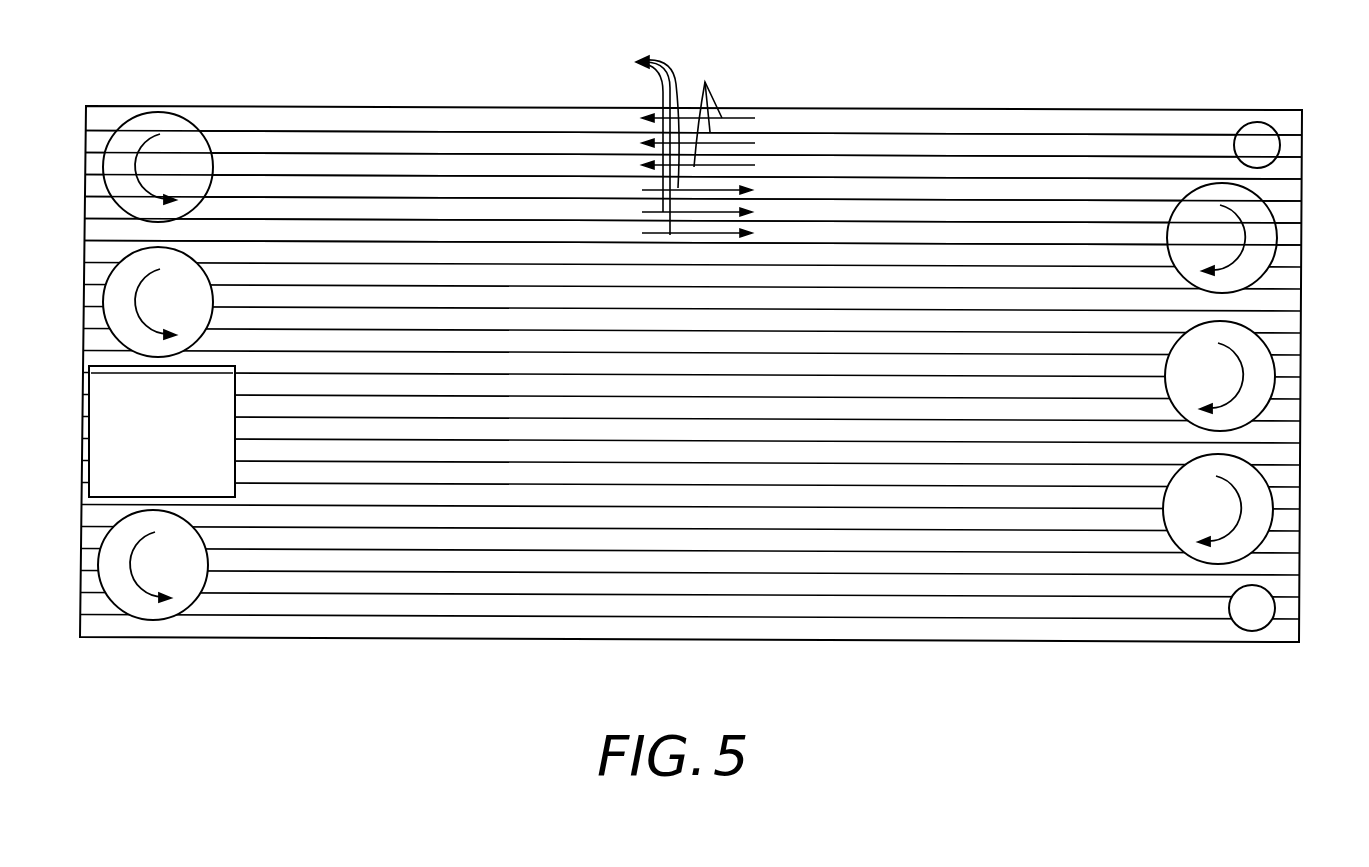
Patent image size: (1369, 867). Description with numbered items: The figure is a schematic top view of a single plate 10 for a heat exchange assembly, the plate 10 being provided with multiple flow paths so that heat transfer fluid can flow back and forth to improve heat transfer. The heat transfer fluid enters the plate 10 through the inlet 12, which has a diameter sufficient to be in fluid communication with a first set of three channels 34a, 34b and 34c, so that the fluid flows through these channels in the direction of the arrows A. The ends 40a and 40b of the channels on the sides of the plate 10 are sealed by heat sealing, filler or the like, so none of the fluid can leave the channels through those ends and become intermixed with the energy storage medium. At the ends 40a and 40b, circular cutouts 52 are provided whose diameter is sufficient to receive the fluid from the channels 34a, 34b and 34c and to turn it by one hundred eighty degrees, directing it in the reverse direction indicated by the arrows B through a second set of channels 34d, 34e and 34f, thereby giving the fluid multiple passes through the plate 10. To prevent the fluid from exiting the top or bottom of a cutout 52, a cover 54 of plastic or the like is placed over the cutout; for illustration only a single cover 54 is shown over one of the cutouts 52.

The plate 10 is at (946, 650).
The inlet 12 is at (1258, 148).
The channel 34a is at (1037, 125).
The channel 34b is at (980, 148).
The channel 34c is at (942, 167).
The channel 34d is at (905, 187).
The channel 34e is at (855, 213).
The channel 34f is at (818, 233).
The end 40a is at (1302, 368).
The end 40b is at (86, 166).
The cutout 52 is at (175, 150).
The cover 54 is at (233, 432).
The arrows A is at (697, 145).
The arrows B is at (683, 144).